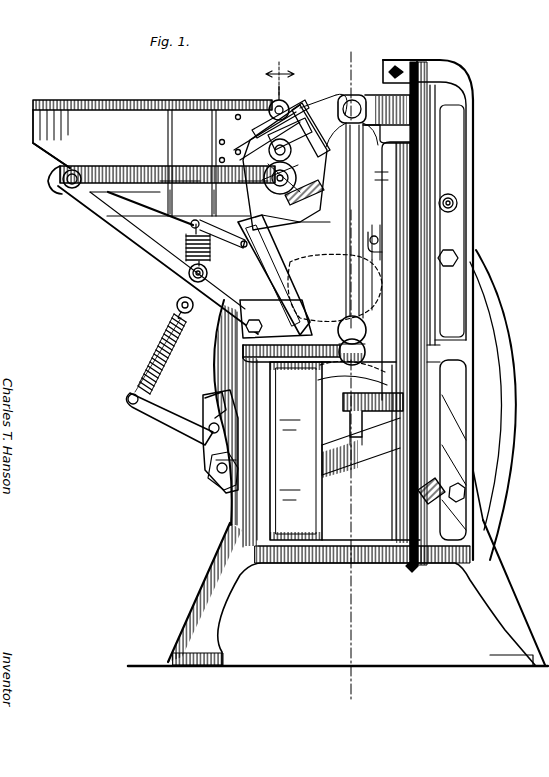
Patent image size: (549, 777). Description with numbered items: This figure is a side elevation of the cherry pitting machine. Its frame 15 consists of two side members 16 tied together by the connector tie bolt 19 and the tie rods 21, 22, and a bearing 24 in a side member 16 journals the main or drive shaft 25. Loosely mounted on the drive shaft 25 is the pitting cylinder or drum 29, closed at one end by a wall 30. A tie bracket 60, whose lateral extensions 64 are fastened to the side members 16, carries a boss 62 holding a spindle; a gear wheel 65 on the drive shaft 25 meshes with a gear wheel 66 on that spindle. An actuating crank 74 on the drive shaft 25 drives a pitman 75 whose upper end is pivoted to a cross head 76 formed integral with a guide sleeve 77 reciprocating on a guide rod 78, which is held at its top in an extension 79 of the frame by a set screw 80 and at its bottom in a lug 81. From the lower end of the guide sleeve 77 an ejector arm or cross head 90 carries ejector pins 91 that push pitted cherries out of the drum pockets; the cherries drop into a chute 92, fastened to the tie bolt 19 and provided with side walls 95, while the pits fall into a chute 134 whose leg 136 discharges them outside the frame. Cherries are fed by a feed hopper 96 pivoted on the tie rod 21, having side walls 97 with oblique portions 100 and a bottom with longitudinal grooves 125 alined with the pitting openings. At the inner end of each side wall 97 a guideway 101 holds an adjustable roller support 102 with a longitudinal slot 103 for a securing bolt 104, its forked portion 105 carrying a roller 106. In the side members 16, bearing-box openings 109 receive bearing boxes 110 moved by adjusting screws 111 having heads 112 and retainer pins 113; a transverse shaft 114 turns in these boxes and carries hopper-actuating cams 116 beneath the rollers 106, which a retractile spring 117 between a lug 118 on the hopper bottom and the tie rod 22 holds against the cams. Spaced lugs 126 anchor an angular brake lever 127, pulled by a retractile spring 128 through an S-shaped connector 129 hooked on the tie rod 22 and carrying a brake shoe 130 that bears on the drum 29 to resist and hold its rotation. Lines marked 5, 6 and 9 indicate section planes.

The section line 5 is at (351, 369).
The lever frame 6 is at (285, 70).
The cam block 9 is at (300, 160).
The frame 15 is at (130, 238).
The side members 16 is at (246, 514).
The connector tie bolt 19 is at (458, 203).
The tie rod 21 is at (64, 188).
The tie rod 22 is at (188, 277).
The bearing 24 is at (322, 368).
The main or drive shaft 25 is at (366, 330).
The pitting cylinder or drum 29 is at (345, 480).
The wall 30 is at (448, 401).
The tie bracket 60 is at (372, 212).
The boss 62 is at (378, 243).
The lateral extensions 64 is at (380, 226).
The gear wheel 65 is at (323, 400).
The gear wheel 66 is at (380, 278).
The actuating crank 74 is at (366, 352).
The pitman 75 is at (346, 216).
The cross head 76 is at (372, 97).
The guide sleeve 77 is at (410, 300).
The guide rod 78 is at (395, 490).
The extension 79 is at (440, 78).
The set screw 80 is at (400, 66).
The lug 81 is at (410, 568).
The ejector arm or cross head 90 is at (380, 410).
The ejector pins 91 is at (352, 428).
The chute 92 is at (500, 305).
The side walls 95 is at (440, 497).
The feed hopper 96 is at (36, 142).
The side walls 97 is at (88, 118).
The oblique portions 100 is at (190, 118).
The guideway 101 is at (262, 124).
The roller support 102 is at (270, 102).
The longitudinal slot 103 is at (296, 108).
The securing bolt 104 is at (300, 104).
The forked portion 105 is at (308, 132).
The roller 106 is at (218, 159).
The bearing-box openings 109 is at (224, 225).
The bearing boxes or blocks 110 is at (320, 157).
The adjusting screw 111 is at (305, 168).
The heads 112 is at (306, 108).
The retainer pins 113 is at (218, 141).
The transverse shaft 114 is at (268, 177).
The hopper-actuating cams 116 is at (179, 175).
The retractile spring 117 is at (190, 253).
The lug 118 is at (190, 222).
The grooves 125 is at (192, 202).
The spaced lugs 126 is at (215, 472).
The angular brake lever 127 is at (218, 455).
The retractile spring 128 is at (163, 364).
The S-shaped connector 129 is at (178, 308).
The brake shoe 130 is at (205, 405).
The chute 134 is at (298, 540).
The leg 136 is at (295, 460).